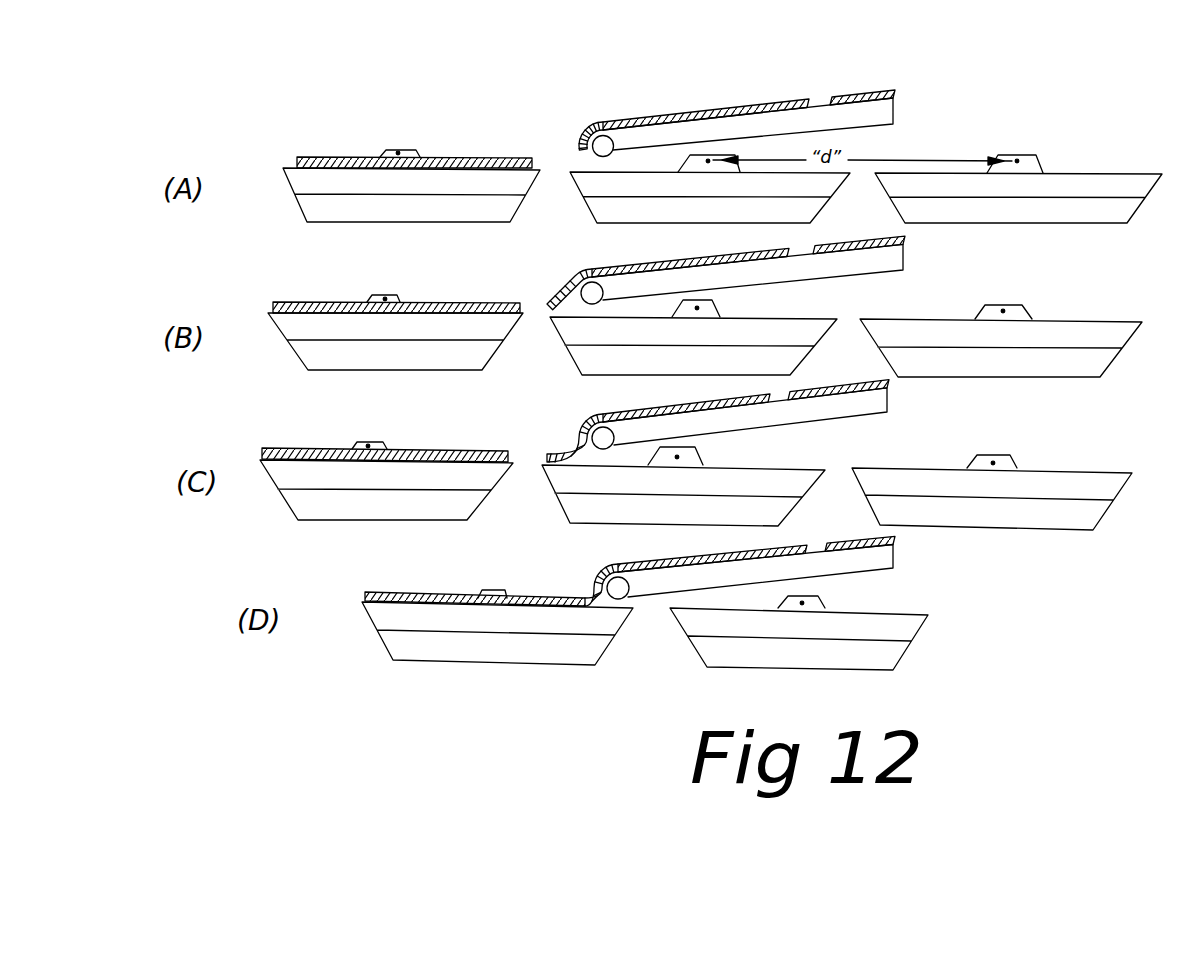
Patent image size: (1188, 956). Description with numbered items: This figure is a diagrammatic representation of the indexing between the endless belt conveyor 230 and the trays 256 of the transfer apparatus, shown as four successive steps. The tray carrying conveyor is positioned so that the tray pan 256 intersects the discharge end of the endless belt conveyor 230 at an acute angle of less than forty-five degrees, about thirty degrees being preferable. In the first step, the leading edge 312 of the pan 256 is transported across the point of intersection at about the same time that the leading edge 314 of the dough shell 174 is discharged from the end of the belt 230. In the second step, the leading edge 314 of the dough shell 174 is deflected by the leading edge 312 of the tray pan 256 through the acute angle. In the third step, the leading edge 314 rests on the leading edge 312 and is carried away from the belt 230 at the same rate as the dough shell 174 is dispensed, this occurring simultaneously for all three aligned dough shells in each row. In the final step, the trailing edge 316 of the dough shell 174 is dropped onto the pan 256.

The dough shell 174 is at (480, 157).
The endless belt conveyor 230 is at (857, 130).
The tray pan 256 is at (1075, 227).
The leading edge of pan 312 is at (572, 180).
The leading edge of dough shell 314 is at (575, 147).
The trailing edge of dough shell 316 is at (603, 583).